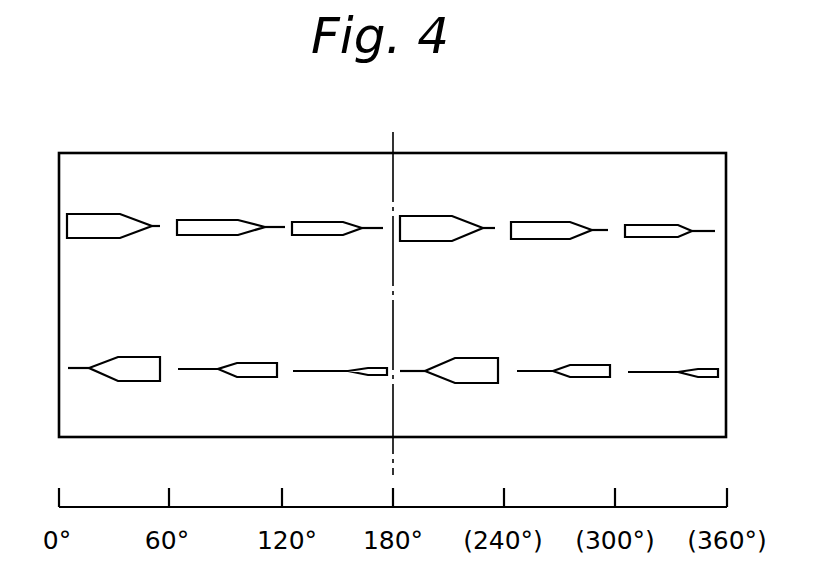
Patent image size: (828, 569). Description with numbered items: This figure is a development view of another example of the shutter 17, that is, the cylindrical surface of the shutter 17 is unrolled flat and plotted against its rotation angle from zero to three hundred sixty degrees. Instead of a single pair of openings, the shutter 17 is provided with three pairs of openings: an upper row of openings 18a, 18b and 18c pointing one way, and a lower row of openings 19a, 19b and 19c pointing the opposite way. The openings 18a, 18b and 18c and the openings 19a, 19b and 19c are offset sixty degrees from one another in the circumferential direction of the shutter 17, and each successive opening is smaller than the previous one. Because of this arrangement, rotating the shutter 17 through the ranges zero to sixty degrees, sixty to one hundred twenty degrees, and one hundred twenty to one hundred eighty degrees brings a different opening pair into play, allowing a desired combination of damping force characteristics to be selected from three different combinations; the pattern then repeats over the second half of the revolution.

The shutter 17 is at (702, 178).
The opening 18a is at (100, 215).
The opening 18b is at (218, 219).
The opening 18c is at (325, 221).
The opening 19a is at (144, 381).
The opening 19b is at (261, 377).
The opening 19c is at (369, 375).